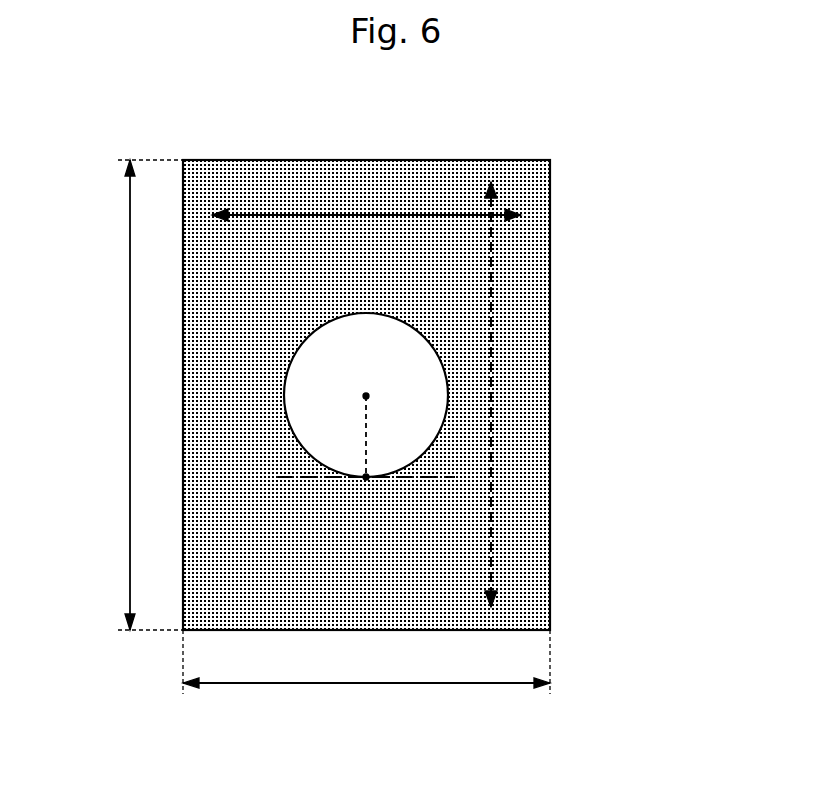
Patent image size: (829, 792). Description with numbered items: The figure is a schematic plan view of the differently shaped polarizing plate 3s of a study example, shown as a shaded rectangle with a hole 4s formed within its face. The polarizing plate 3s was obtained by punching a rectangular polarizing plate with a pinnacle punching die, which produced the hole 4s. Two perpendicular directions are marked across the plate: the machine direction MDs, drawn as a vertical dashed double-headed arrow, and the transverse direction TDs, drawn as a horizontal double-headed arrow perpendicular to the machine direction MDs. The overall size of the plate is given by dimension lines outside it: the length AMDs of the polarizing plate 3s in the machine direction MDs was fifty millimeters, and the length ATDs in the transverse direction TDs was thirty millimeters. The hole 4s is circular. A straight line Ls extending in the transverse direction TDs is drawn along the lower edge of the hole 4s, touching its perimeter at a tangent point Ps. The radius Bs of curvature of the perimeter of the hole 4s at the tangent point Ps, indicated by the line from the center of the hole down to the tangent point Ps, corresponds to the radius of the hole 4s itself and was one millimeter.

The differently shaped polarizing plate 3s is at (520, 178).
The hole 4s is at (350, 328).
The transverse direction TDs is at (264, 215).
The machine direction MDs is at (491, 340).
The radius of curvature Bs is at (367, 435).
The tangent point Ps is at (367, 494).
The straight line Ls is at (413, 478).
The length in the machine direction AMDs is at (116, 395).
The length in the transverse direction ATDs is at (366, 679).